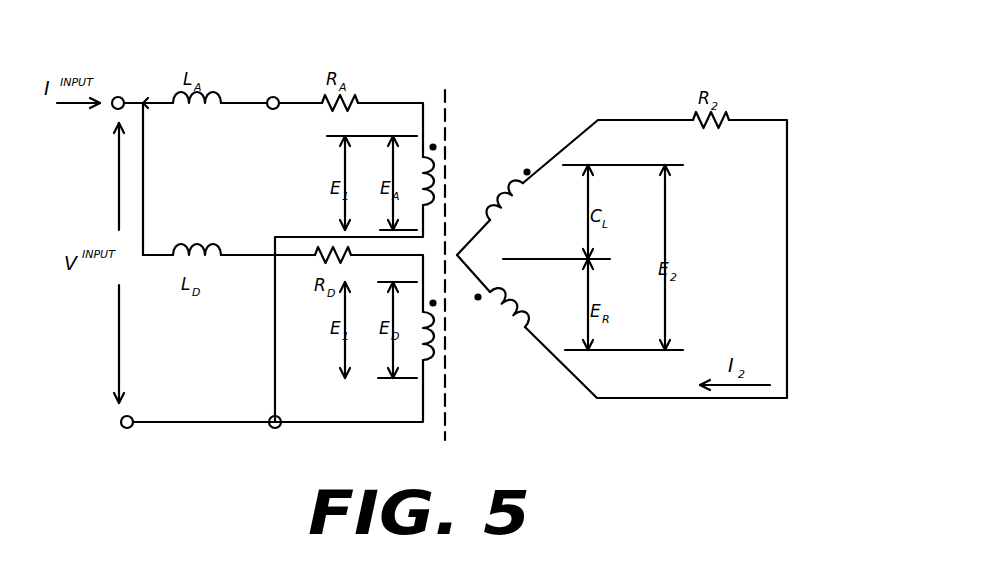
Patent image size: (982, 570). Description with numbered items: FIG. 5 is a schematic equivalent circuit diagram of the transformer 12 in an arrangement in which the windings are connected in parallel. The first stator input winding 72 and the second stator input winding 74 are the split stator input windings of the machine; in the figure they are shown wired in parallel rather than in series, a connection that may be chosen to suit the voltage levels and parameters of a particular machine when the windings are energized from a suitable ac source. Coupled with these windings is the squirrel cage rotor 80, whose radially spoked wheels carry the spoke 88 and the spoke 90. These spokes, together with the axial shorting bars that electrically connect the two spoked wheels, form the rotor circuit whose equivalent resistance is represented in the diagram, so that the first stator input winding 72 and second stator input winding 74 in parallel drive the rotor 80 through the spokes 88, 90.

The transformer 12 is at (460, 56).
The first stator input winding 72 is at (445, 166).
The second stator input winding 74 is at (430, 358).
The squirrel cage rotor 80 is at (650, 255).
The spoke 88 is at (503, 192).
The spoke 90 is at (500, 325).